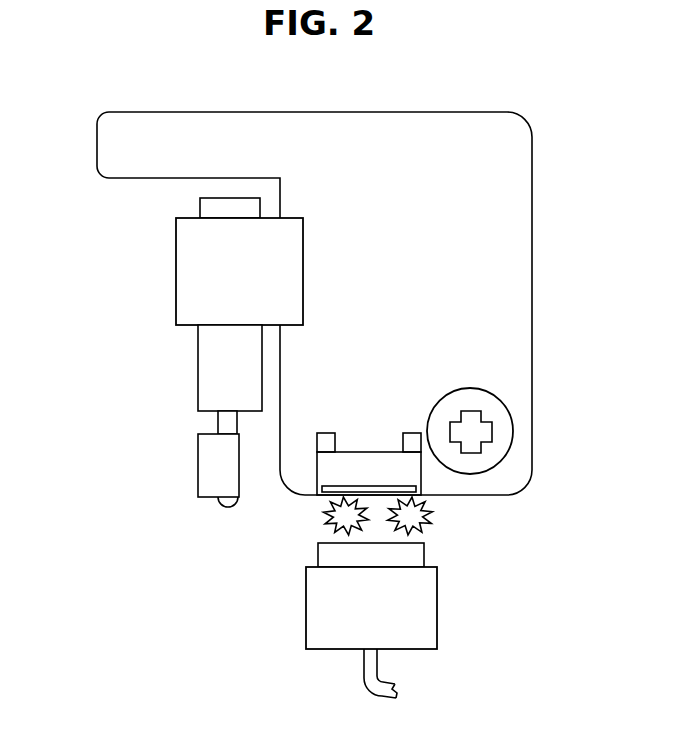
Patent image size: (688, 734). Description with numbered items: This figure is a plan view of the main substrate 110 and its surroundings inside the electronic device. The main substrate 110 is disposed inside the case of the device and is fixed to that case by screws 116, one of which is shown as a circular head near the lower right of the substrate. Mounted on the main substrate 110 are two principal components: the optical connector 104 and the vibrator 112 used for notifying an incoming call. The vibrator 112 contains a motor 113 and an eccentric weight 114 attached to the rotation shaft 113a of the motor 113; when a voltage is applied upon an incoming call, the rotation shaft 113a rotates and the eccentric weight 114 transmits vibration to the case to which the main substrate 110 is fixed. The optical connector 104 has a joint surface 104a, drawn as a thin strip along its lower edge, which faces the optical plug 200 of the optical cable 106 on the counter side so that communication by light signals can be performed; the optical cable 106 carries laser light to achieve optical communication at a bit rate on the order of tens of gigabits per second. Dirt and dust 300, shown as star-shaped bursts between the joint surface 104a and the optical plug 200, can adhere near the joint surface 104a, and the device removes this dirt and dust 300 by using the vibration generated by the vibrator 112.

The main substrate 110 is at (372, 110).
The vibrator 112 is at (165, 277).
The motor 113 is at (213, 367).
The rotation shaft 113a is at (232, 424).
The eccentric weight 114 is at (214, 480).
The optical connector 104 is at (413, 475).
The joint surface 104a is at (322, 489).
The screw 116 is at (500, 431).
The dirt and dust 300 is at (333, 522).
The optical plug 200 is at (437, 606).
The optical cable 106 is at (364, 686).